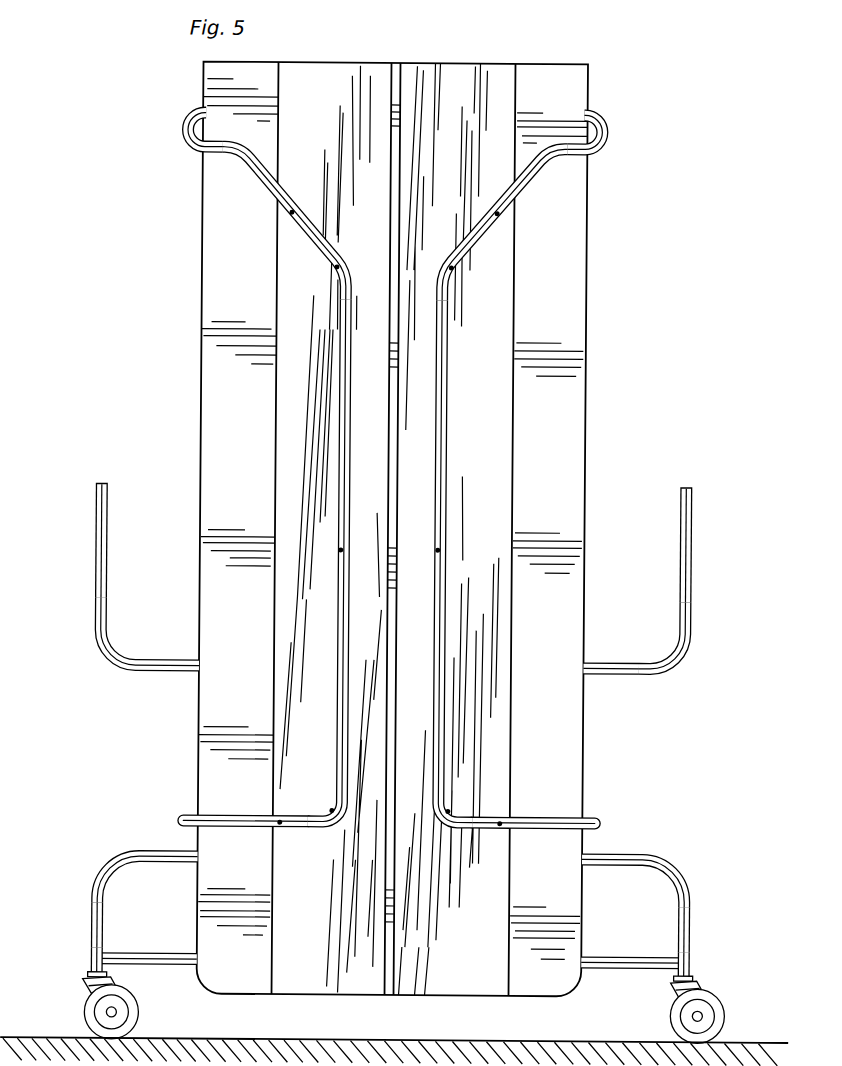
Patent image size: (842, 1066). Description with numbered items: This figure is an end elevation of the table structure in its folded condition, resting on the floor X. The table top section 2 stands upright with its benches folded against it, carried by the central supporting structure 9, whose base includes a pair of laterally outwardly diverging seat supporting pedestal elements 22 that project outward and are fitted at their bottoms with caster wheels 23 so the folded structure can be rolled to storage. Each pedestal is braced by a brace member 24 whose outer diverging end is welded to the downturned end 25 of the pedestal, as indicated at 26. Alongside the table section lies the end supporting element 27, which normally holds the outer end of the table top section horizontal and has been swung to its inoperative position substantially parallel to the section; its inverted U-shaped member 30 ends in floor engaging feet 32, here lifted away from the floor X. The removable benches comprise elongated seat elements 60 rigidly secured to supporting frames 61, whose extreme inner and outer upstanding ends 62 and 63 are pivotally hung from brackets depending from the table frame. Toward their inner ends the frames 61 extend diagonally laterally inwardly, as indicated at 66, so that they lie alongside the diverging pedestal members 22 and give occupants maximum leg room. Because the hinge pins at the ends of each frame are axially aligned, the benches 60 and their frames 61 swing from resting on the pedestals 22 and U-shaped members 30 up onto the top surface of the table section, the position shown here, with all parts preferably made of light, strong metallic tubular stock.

The table top section 2 is at (407, 529).
The supporting structure 9 is at (397, 909).
The seat supporting pedestal element 22 is at (181, 865).
The caster wheel 23 is at (90, 1007).
The brace member 24 is at (157, 967).
The downturned end 25 is at (95, 919).
The brace connection 26 is at (95, 960).
The end supporting element 27 is at (691, 651).
The inverted U-shaped member 30 is at (171, 669).
The floor engaging foot 32 is at (98, 485).
The seat element 60 is at (497, 444).
The supporting frame 61 is at (341, 451).
The inner end 62 is at (187, 114).
The outer end 63 is at (180, 819).
The diagonal portion 66 is at (276, 200).
The floor X is at (326, 1041).